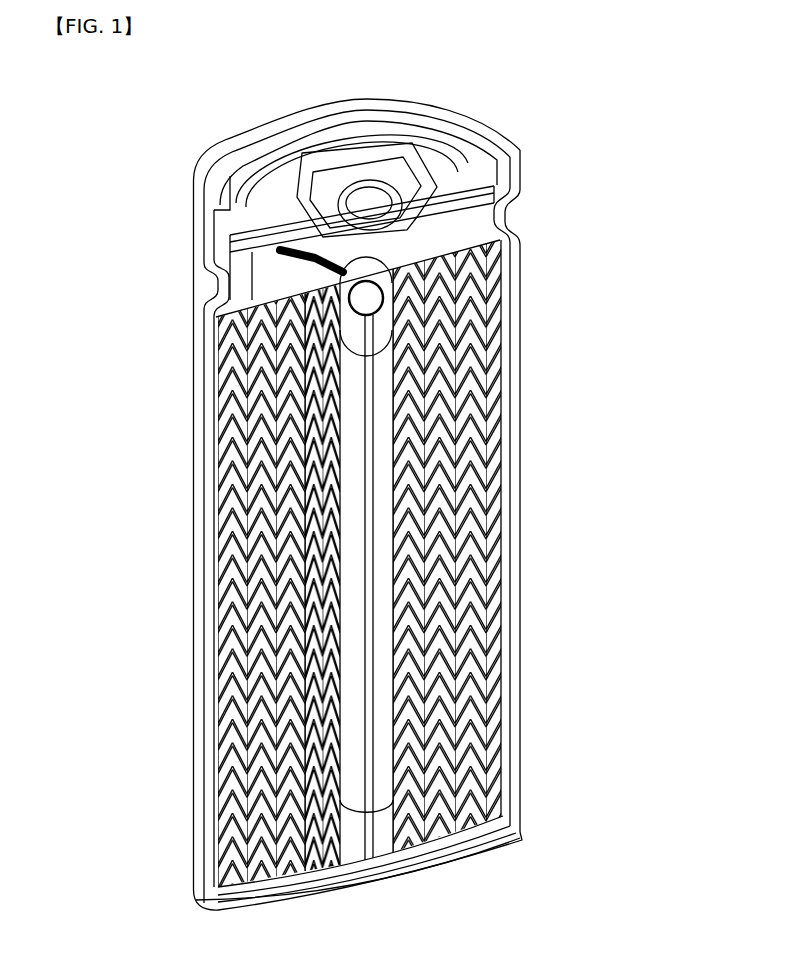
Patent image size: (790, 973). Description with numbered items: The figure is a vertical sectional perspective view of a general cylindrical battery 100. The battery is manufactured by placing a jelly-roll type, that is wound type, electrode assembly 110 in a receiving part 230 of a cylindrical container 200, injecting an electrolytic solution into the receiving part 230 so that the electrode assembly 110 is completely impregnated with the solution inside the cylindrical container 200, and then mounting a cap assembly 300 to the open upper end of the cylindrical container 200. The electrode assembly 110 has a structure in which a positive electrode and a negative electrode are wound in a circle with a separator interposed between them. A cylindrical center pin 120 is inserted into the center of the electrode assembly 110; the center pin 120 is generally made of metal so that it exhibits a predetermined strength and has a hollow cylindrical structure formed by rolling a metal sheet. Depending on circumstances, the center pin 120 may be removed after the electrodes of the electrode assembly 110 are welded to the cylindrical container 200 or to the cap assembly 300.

The cylindrical battery 100 is at (97, 113).
The electrode assembly 110 is at (518, 828).
The center pin 120 is at (350, 558).
The cylindrical container 200 is at (520, 470).
The receiving part 230 is at (468, 705).
The cap assembly 300 is at (530, 142).